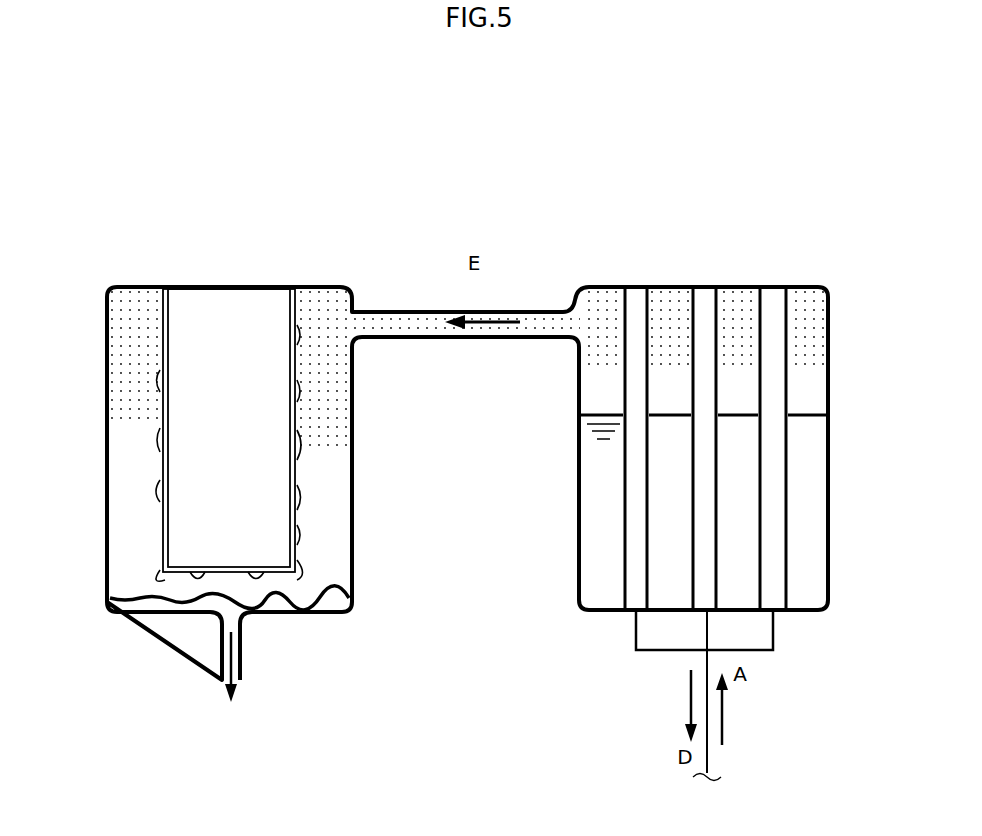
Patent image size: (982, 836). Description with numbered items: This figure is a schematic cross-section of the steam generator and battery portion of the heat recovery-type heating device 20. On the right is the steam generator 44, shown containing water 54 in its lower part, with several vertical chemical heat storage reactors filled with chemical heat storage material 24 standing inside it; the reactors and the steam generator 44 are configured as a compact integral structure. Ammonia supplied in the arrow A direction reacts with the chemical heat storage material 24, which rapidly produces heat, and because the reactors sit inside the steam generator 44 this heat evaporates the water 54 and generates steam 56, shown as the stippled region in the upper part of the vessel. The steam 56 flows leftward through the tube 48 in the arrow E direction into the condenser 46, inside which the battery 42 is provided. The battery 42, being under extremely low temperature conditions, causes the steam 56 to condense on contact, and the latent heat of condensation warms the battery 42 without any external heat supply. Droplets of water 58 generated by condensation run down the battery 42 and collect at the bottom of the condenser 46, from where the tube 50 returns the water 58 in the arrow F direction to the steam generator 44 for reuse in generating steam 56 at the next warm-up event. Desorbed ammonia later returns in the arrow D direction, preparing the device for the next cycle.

The heat recovery-type heating device 20 is at (714, 202).
The chemical heat storage material 24 is at (623, 309).
The battery 42 is at (213, 303).
The steam generator 44 is at (674, 246).
The condenser 46 is at (98, 297).
The tube 48 is at (388, 312).
The tube 50 is at (242, 640).
The water 54 is at (603, 412).
The steam 56 is at (552, 322).
The water 58 is at (155, 495).